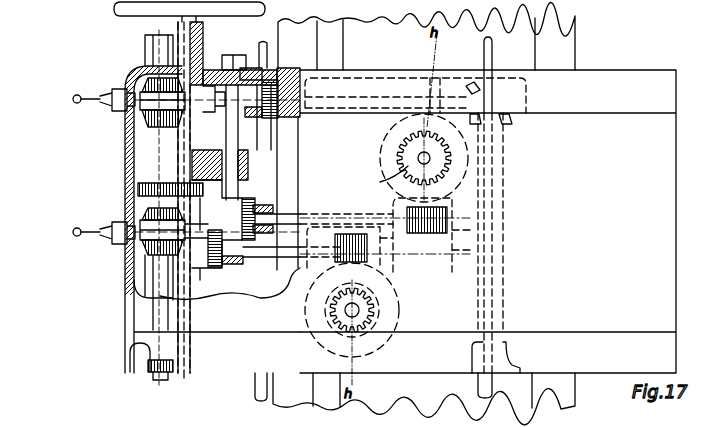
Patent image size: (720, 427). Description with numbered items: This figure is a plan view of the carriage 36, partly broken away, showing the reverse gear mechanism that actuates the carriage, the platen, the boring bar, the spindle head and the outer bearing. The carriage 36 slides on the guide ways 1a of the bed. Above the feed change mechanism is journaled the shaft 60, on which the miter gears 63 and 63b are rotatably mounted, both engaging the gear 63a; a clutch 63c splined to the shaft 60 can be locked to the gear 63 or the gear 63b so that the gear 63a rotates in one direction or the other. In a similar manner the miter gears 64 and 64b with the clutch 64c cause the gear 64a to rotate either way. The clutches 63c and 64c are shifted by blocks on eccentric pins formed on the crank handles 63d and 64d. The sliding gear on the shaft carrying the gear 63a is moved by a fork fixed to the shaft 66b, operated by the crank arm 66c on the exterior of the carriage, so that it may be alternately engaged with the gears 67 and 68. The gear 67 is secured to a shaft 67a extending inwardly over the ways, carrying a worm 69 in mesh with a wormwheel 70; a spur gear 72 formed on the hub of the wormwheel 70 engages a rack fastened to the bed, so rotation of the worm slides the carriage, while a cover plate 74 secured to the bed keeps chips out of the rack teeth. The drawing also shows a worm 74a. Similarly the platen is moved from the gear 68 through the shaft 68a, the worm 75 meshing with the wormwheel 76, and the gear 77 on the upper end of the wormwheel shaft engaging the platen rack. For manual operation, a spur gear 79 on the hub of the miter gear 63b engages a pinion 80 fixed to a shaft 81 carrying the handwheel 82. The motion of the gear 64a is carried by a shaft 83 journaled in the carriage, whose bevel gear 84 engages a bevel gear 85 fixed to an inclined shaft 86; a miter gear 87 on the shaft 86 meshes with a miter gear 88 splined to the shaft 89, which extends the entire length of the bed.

The guide ways 1a is at (575, 45).
The carriage 36 is at (637, 79).
The shaft 60 is at (160, 333).
The miter gear 63 is at (128, 282).
The gear 63a is at (196, 262).
The miter gear 63b is at (148, 212).
The clutch 63c is at (150, 252).
The crank handle 63d is at (73, 232).
The miter gear 64 is at (140, 124).
The gear 64a is at (190, 112).
The miter gear 64b is at (148, 70).
The clutch 64c is at (150, 85).
The crank handle 64d is at (73, 99).
The shaft 66b is at (252, 162).
The crank arm 66c is at (234, 56).
The gear 67 is at (226, 268).
The shaft 67a is at (266, 252).
The gear 68 is at (250, 200).
The shaft 68a is at (306, 210).
The worm 69 is at (346, 228).
The wormwheel 70 is at (400, 311).
The spur gear 72 is at (332, 306).
The cover plate 74 is at (343, 40).
The worm 74a is at (440, 272).
The worm 75 is at (380, 162).
The wormwheel 76 is at (402, 146).
The gear 77 is at (381, 178).
The spur gear 79 is at (140, 183).
The pinion 80 is at (217, 230).
The shaft 81 is at (192, 150).
The handwheel 82 is at (120, 9).
The shaft 83 is at (210, 62).
The bevel gear 84 is at (262, 118).
The bevel gear 85 is at (273, 78).
The inclined shaft 86 is at (363, 100).
The miter gear 87 is at (474, 82).
The miter gear 88 is at (512, 122).
The shaft 89 is at (493, 55).